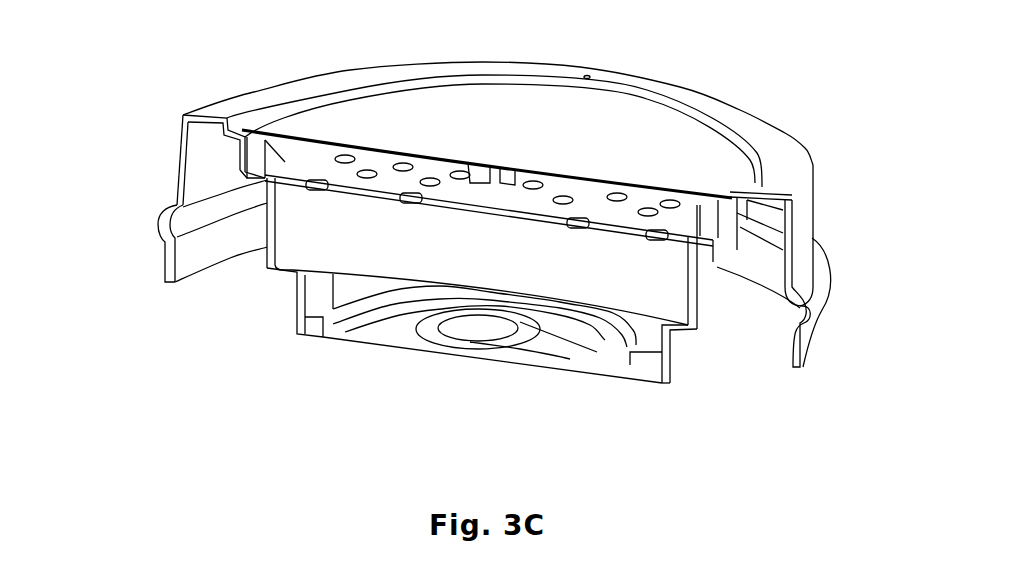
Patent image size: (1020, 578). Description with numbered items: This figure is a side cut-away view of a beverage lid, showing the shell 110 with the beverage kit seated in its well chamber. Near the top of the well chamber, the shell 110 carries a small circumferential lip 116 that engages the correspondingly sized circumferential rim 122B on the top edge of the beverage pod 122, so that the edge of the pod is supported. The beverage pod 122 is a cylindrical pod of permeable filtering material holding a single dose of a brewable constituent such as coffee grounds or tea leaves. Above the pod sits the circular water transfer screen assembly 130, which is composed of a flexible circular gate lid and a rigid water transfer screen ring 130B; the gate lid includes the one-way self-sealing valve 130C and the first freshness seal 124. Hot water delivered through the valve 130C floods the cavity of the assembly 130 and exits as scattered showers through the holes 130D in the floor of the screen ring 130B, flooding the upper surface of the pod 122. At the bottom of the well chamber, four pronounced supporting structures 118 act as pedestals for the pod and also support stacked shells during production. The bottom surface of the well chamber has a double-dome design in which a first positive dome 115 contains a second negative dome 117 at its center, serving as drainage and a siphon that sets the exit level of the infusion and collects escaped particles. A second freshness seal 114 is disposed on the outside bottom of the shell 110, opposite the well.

The shell 110 is at (693, 100).
The second freshness seal or sticker 114 is at (390, 348).
The first positive dome 115 is at (567, 337).
The circumferential lip 116 is at (730, 258).
The second negative dome 117 is at (483, 325).
The supporting structures 118 is at (285, 280).
The beverage pod 122 is at (454, 258).
The circumferential rim 122B is at (271, 188).
The first freshness seal or sticker 124 is at (512, 128).
The circular water transfer screen assembly 130 is at (283, 162).
The water transfer screen ring 130B is at (648, 207).
The one-way self-sealing valve 130C is at (480, 165).
The holes 130D is at (367, 170).